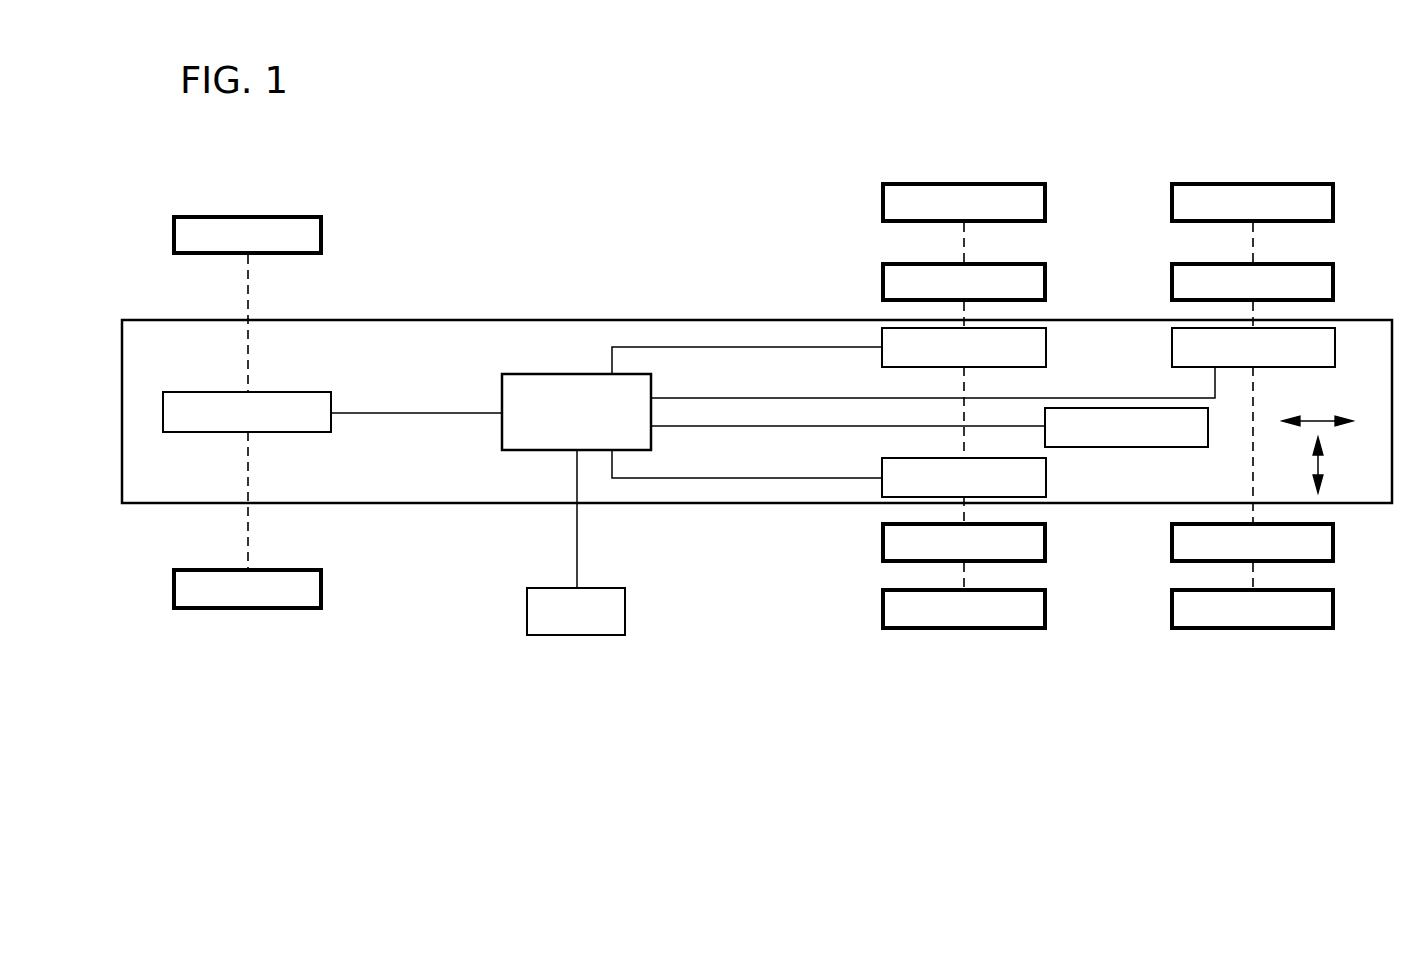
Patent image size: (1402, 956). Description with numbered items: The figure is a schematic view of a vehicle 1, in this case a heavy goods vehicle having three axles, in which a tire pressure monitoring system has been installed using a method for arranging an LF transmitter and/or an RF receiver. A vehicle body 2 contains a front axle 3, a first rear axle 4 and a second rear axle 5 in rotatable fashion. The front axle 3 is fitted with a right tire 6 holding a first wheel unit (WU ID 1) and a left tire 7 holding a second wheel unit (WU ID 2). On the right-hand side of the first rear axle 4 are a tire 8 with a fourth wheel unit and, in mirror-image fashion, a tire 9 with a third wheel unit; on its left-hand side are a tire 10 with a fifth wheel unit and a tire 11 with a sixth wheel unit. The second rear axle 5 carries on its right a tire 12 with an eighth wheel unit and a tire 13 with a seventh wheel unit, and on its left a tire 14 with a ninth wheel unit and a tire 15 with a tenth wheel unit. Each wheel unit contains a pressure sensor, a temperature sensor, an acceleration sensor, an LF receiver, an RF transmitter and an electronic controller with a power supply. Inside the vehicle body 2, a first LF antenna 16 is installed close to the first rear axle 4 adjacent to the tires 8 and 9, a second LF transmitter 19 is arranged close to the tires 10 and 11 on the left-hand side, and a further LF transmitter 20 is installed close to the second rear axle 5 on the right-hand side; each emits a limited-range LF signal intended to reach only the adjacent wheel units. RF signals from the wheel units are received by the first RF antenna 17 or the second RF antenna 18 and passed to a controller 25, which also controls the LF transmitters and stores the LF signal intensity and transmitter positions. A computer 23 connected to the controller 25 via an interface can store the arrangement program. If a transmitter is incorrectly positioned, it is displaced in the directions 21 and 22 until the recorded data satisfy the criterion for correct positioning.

The vehicle 1 is at (1330, 154).
The vehicle body 2 is at (538, 320).
The front axle 3 is at (247, 290).
The first rear axle 4 is at (964, 255).
The second rear axle 5 is at (1253, 255).
The right tire 6 is at (248, 215).
The left tire 7 is at (247, 611).
The tire 8 is at (881, 278).
The tire 9 is at (881, 200).
The tire 10 is at (881, 542).
The tire 11 is at (881, 608).
The tire 12 is at (1170, 278).
The tire 13 is at (1170, 200).
The tire 14 is at (1170, 542).
The tire 15 is at (1170, 608).
The first LF antenna 16 is at (882, 352).
The first RF antenna 17 is at (210, 392).
The second RF antenna 18 is at (1045, 430).
The second LF transmitter 19 is at (1046, 478).
The LF transmitter 20 is at (1172, 346).
The direction 21 is at (1320, 419).
The direction 22 is at (1320, 465).
The computer 23 is at (527, 612).
The controller 25 is at (502, 395).